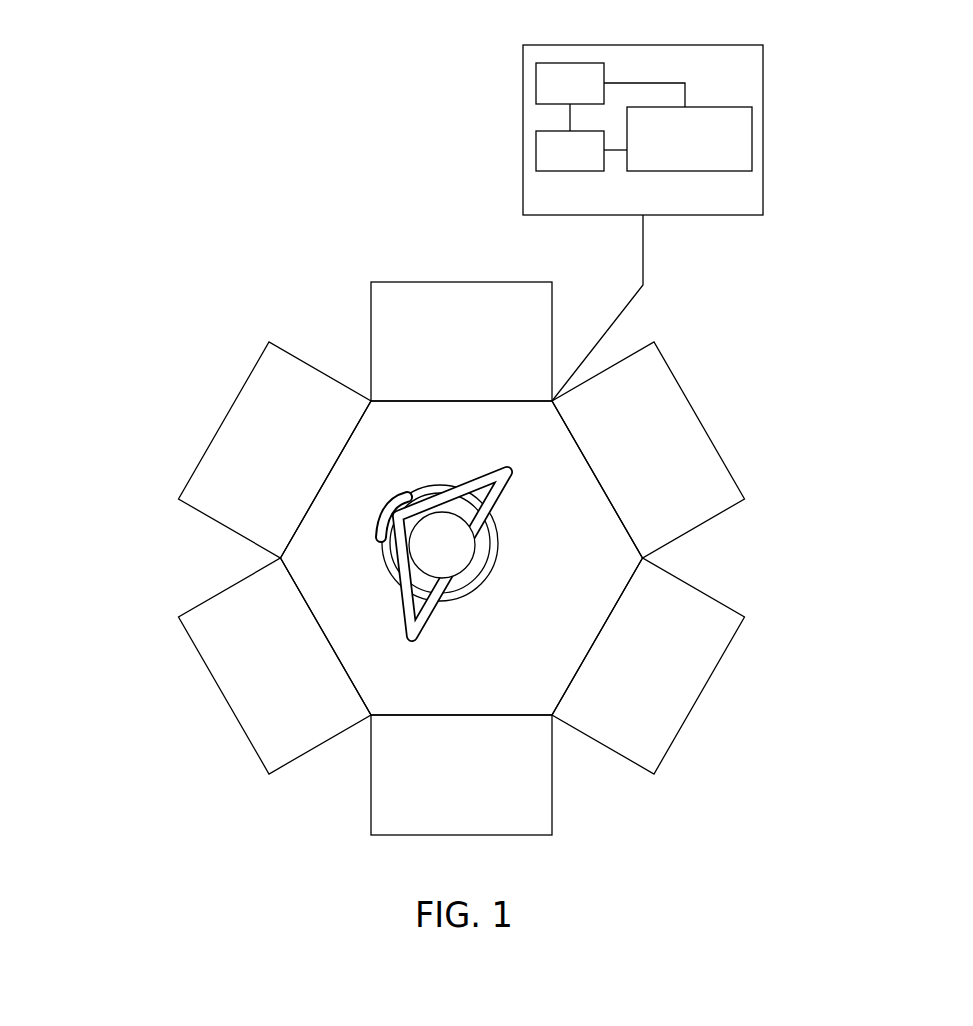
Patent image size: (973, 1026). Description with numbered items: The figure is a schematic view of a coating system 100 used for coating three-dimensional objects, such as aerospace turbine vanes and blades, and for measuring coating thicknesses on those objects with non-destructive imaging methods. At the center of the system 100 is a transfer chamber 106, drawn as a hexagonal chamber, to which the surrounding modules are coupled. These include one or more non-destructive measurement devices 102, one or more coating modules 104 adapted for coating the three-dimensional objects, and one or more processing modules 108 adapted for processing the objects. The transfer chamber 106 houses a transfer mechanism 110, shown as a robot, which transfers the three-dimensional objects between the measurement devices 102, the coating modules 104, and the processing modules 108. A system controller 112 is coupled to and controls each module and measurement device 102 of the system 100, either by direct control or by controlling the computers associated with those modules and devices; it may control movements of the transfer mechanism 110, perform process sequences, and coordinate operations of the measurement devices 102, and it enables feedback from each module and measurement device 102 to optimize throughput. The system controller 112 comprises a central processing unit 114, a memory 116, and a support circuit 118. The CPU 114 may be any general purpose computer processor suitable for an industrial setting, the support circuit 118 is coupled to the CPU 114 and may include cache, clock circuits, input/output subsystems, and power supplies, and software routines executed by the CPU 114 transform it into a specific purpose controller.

The coating system 100 is at (852, 244).
The non-destructive measurement device 102 is at (698, 415).
The coating module 104 is at (455, 282).
The transfer chamber 106 is at (478, 688).
The processing module 108 is at (228, 705).
The transfer mechanism 110 is at (502, 550).
The system controller 112 is at (708, 45).
The central processing unit (CPU) 114 is at (536, 82).
The memory 116 is at (536, 150).
The support circuit 118 is at (730, 107).